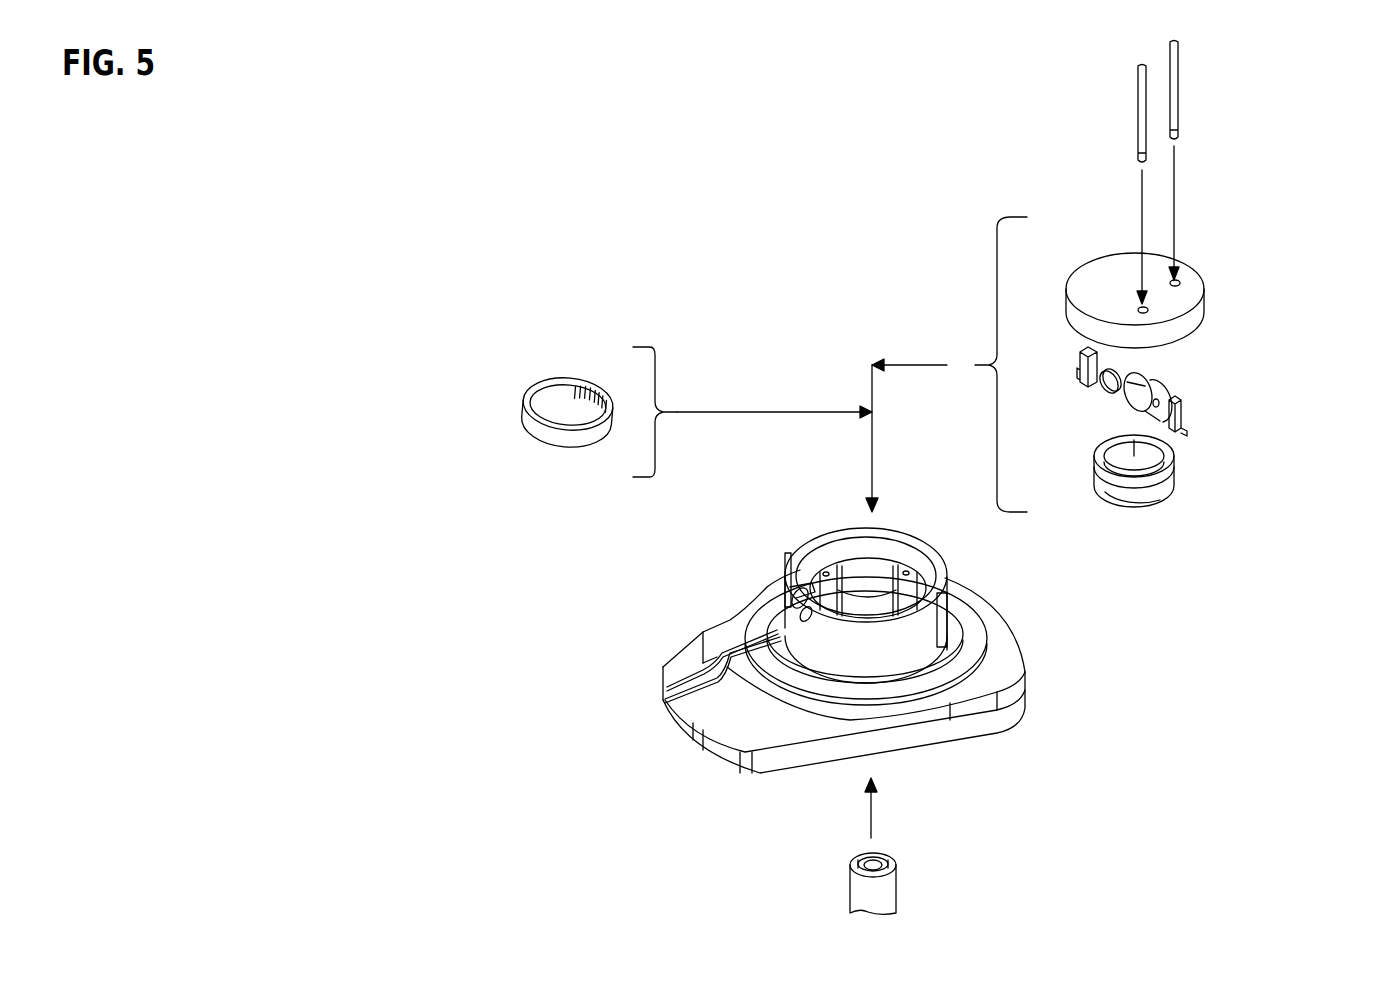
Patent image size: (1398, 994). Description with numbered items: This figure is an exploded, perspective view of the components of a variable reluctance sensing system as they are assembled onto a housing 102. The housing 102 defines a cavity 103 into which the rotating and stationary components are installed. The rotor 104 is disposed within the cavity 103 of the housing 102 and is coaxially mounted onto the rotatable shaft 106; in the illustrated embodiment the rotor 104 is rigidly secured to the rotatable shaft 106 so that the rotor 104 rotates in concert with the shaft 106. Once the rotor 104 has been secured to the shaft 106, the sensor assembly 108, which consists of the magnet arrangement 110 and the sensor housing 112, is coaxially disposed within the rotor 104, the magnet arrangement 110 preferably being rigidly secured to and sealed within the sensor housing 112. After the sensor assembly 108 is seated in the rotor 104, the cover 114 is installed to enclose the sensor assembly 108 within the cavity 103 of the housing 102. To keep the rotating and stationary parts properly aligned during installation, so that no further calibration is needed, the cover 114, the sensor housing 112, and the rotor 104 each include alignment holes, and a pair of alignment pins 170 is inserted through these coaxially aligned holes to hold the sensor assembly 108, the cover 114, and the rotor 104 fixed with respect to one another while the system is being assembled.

The housing 102 is at (712, 720).
The cavity 103 is at (835, 555).
The rotor 104 is at (523, 420).
The rotatable shaft 106 is at (885, 887).
The sensor assembly 108 is at (1224, 493).
The magnet arrangement 110 is at (1188, 383).
The sensor housing 112 is at (1155, 498).
The cover 114 is at (1192, 330).
The alignment pins 170 is at (1190, 107).